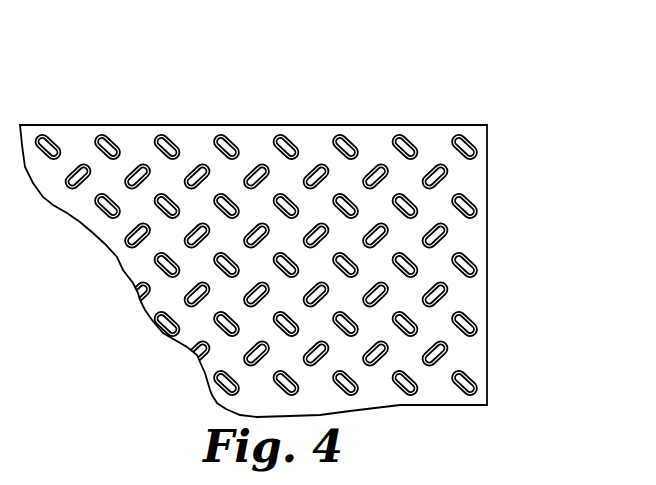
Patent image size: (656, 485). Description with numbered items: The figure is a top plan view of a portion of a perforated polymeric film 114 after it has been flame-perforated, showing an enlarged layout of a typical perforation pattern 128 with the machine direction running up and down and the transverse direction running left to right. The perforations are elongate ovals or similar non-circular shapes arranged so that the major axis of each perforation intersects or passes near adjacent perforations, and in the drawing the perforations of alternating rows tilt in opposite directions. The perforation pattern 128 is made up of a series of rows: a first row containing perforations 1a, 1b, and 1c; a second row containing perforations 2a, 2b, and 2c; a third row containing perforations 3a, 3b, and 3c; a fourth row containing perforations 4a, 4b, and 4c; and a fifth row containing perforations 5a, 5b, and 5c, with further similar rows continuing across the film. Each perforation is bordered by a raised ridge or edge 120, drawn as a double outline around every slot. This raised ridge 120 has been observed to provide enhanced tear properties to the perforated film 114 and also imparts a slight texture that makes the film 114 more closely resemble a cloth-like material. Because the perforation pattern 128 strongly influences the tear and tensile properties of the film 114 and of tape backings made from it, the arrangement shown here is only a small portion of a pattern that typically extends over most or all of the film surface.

The perforated polymeric film 114 is at (528, 60).
The perforation pattern 128 is at (112, 103).
The raised ridge 120 is at (156, 142).
The perforation 1a is at (463, 143).
The perforation 1b is at (403, 144).
The perforation 1c is at (345, 143).
The perforation 2a is at (433, 172).
The perforation 2b is at (375, 172).
The perforation 2c is at (317, 172).
The perforation 3a is at (458, 208).
The perforation 3b is at (413, 215).
The perforation 3c is at (335, 200).
The perforation 4a is at (438, 232).
The perforation 4b is at (368, 238).
The perforation 4c is at (310, 235).
The perforation 5a is at (468, 270).
The perforation 5b is at (407, 261).
The perforation 5c is at (343, 262).